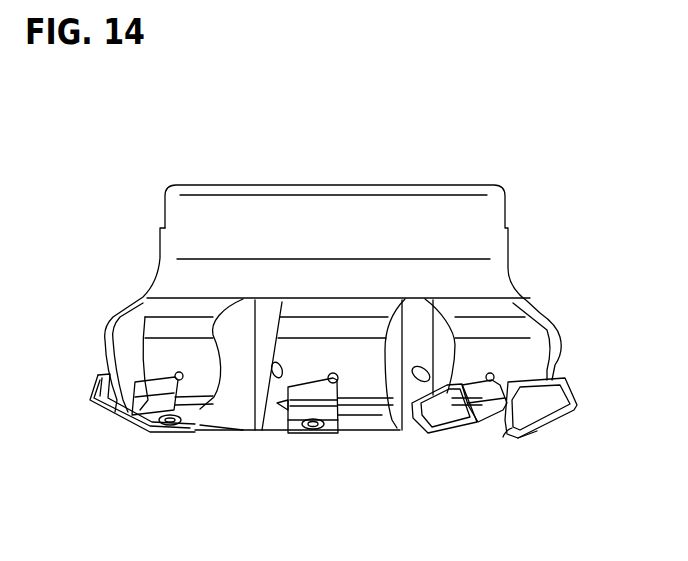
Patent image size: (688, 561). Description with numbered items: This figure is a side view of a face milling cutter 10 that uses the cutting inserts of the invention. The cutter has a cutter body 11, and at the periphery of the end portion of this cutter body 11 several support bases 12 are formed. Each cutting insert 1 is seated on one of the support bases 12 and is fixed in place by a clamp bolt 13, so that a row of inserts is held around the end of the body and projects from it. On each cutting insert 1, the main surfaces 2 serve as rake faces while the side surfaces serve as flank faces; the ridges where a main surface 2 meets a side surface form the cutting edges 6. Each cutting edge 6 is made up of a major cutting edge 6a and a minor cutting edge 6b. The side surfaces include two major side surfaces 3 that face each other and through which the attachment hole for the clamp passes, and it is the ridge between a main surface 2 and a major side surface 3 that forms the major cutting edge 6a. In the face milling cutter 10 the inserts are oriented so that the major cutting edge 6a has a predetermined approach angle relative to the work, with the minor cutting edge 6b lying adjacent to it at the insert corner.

The cutting insert 1 is at (545, 463).
The main surface 2 is at (543, 412).
The major side surface 3 is at (288, 433).
The cutting edge 6 is at (490, 488).
The major cutting edge 6a is at (537, 437).
The minor cutting edge 6b is at (503, 437).
The face milling cutter 10 is at (503, 180).
The cutter body 11 is at (487, 317).
The support base 12 is at (333, 433).
The clamp bolt 13 is at (313, 433).